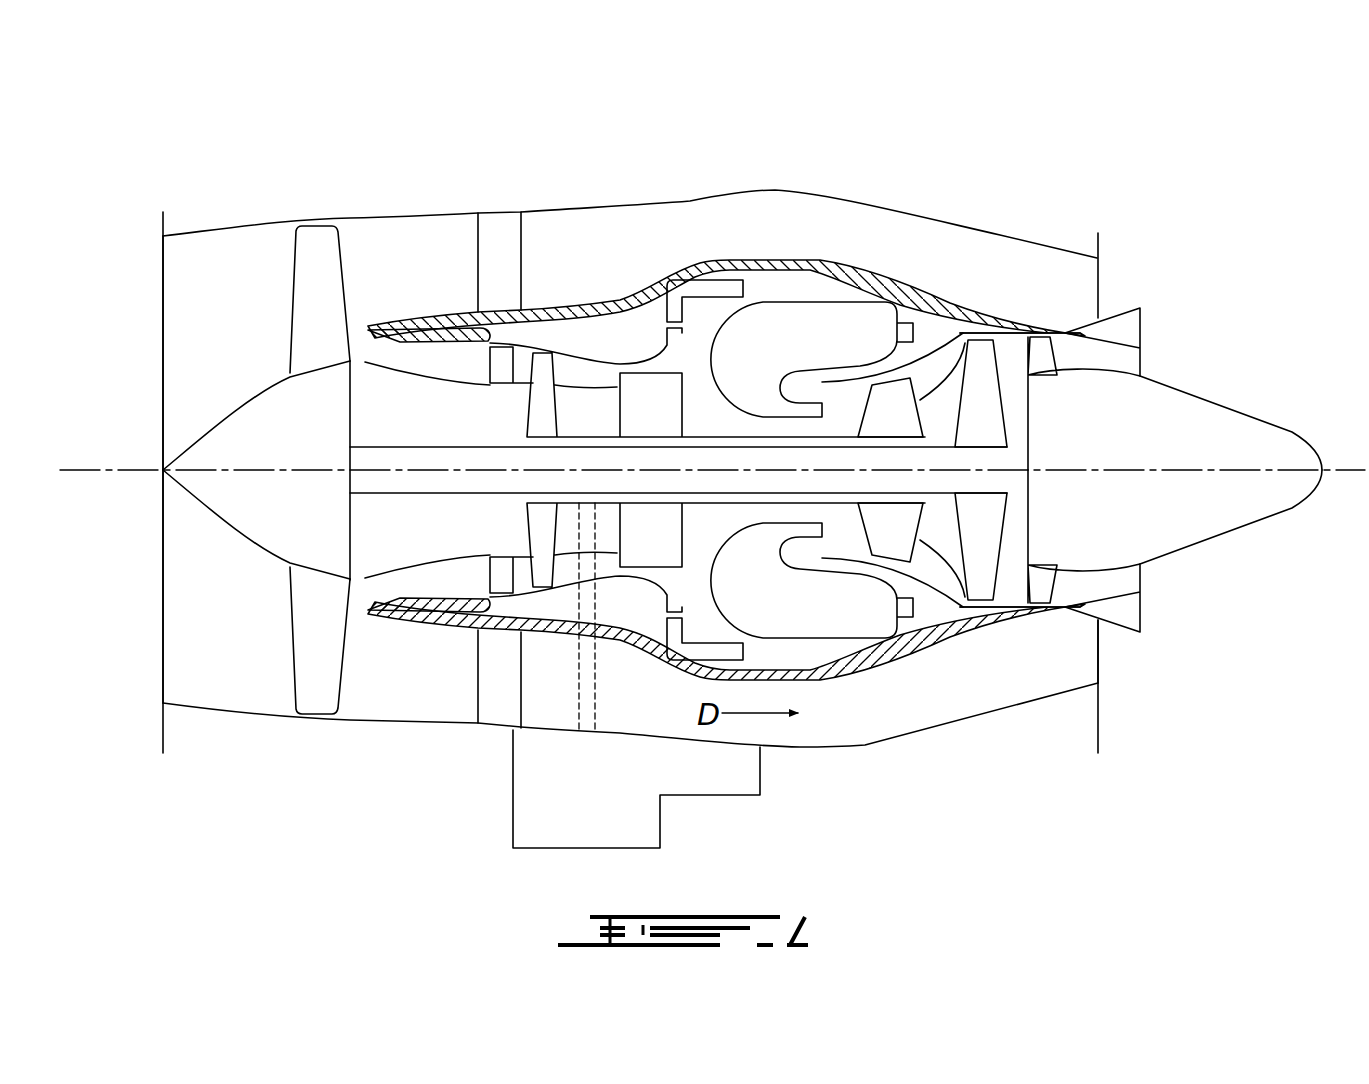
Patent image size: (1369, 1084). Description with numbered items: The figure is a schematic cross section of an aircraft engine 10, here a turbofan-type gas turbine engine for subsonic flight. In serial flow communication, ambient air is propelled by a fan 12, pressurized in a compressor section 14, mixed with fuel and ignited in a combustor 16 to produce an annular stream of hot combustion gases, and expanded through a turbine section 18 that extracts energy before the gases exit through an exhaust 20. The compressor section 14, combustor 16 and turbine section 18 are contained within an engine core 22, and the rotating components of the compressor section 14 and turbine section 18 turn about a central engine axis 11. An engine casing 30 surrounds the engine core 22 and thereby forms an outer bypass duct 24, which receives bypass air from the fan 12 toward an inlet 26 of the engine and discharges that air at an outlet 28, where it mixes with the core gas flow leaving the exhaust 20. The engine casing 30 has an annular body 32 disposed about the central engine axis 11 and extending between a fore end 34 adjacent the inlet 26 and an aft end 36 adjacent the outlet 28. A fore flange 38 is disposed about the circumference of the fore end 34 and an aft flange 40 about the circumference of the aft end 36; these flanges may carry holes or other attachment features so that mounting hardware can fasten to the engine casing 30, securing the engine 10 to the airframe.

The aircraft engine 10 is at (993, 185).
The central engine axis 11 is at (1358, 470).
The fan 12 is at (316, 628).
The compressor section 14 is at (577, 367).
The combustor 16 is at (800, 322).
The turbine section 18 is at (938, 538).
The exhaust 20 is at (1125, 357).
The engine core 22 is at (1001, 627).
The outer bypass duct 24 is at (862, 735).
The inlet 26 is at (190, 670).
The outlet 28 is at (1120, 653).
The engine casing 30 is at (437, 745).
The annular body 32 is at (388, 722).
The fore end 34 is at (138, 720).
The aft end 36 is at (1120, 697).
The fore flange 38 is at (163, 753).
The aft flange 40 is at (1098, 753).